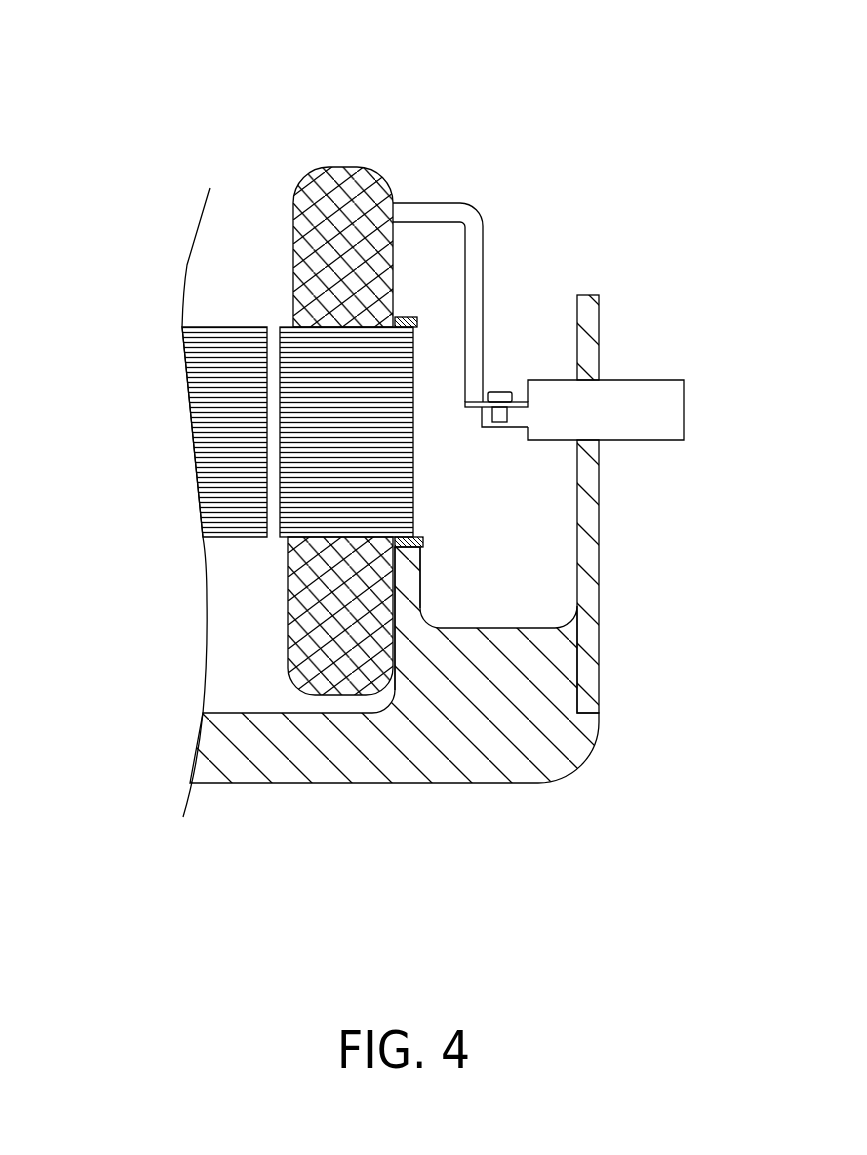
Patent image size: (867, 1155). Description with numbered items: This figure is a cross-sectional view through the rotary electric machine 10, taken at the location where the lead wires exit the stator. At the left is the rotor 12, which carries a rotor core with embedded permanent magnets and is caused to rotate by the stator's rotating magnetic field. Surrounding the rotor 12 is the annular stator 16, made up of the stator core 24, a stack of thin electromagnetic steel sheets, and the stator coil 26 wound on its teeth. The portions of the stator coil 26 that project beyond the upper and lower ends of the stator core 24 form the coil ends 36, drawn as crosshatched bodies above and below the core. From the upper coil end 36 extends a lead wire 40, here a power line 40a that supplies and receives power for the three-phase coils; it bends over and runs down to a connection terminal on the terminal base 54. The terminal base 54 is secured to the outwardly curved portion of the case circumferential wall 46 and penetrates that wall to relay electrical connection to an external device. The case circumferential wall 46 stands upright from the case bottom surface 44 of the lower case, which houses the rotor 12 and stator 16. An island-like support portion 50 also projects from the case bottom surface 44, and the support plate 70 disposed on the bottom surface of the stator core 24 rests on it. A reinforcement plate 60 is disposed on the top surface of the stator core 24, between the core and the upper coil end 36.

The rotary electric machine 10 is at (178, 137).
The rotor 12 is at (198, 430).
The stator 16 is at (342, 152).
The stator core 24 is at (310, 485).
The stator coil 26 is at (303, 412).
The coil end 36 is at (293, 232).
The power line 40a is at (476, 246).
The lead wire 40 is at (433, 208).
The case bottom surface 44 is at (257, 758).
The case circumferential wall 46 is at (592, 520).
The support portion 50 is at (410, 586).
The terminal base 54 is at (650, 390).
The reinforcement plate 60 is at (404, 317).
The support plate 70 is at (418, 535).